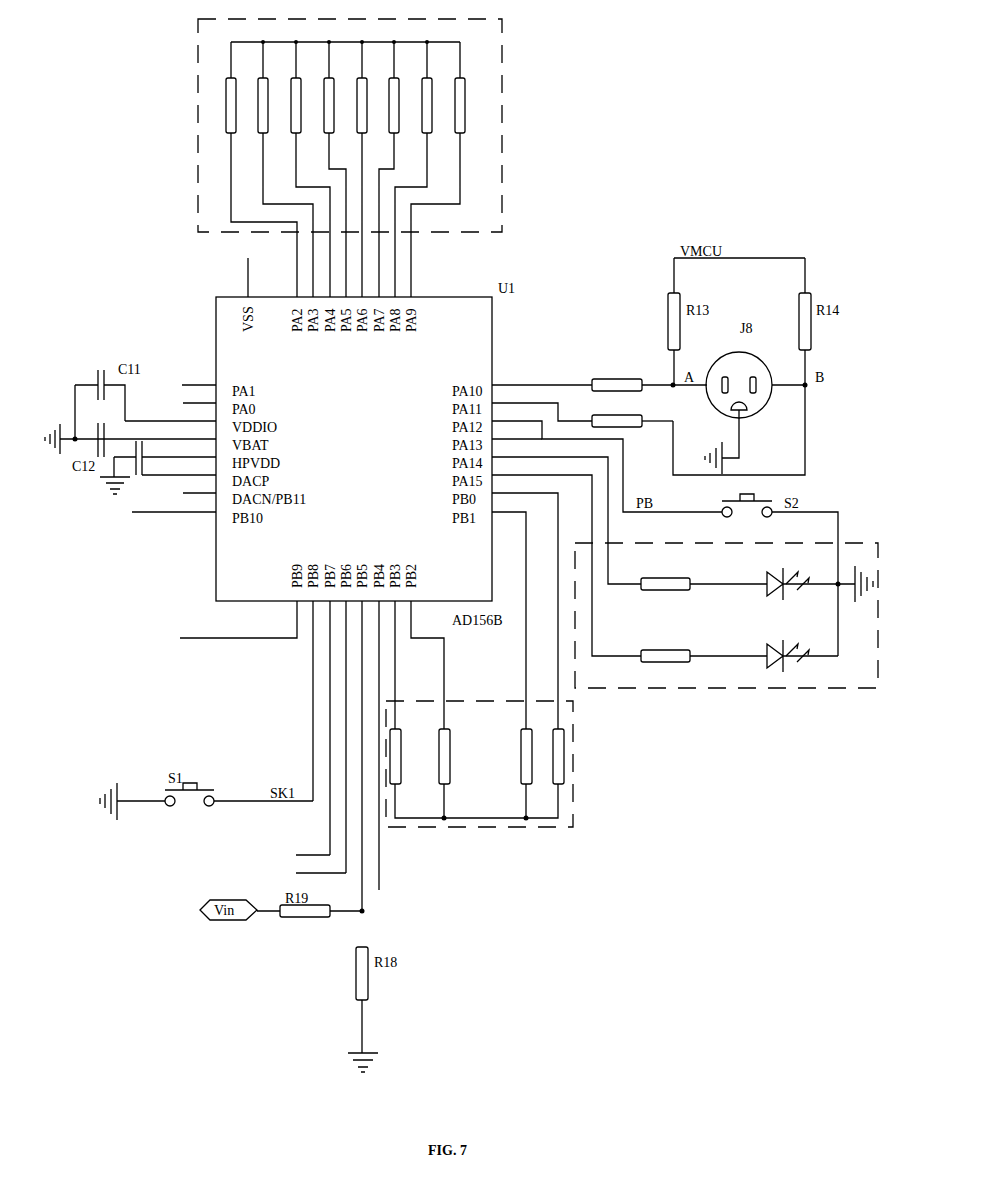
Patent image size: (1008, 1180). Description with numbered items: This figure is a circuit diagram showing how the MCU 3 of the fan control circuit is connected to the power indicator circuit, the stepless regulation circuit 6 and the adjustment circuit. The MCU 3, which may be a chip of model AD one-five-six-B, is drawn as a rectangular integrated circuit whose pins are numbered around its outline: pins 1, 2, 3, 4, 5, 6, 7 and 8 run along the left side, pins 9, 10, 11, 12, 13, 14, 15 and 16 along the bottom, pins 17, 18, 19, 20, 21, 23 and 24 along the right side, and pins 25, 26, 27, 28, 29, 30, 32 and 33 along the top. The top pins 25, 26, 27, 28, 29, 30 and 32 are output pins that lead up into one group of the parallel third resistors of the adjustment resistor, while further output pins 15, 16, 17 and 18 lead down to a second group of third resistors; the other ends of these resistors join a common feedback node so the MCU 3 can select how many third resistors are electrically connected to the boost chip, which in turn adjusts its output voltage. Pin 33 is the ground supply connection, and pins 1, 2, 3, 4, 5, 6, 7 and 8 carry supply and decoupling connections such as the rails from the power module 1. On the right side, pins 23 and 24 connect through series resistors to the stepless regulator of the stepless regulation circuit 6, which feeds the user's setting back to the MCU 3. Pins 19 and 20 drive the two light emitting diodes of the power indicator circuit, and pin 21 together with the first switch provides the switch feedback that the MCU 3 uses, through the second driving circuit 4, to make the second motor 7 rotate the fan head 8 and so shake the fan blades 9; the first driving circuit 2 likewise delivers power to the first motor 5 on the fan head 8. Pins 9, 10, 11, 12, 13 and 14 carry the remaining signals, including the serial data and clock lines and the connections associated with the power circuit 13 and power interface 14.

The power module 1 is at (199, 377).
The first driving circuit 2 is at (199, 395).
The MCU 3 is at (170, 413).
The second driving circuit 4 is at (145, 431).
The first motor 5 is at (179, 449).
The stepless regulation circuit 6 is at (179, 467).
The second motor 7 is at (199, 485).
The fan head 8 is at (174, 504).
The fan blades 9 is at (238, 621).
The MCU pin 10 (PB8) 10 is at (305, 701).
The MCU pin 11 (PB7) 11 is at (313, 728).
The MCU pin 12 (PB6) 12 is at (321, 737).
The power circuit 13 is at (354, 756).
The power interface 14 is at (400, 745).
The MCU pin 15 (PB3) 15 is at (387, 665).
The MCU pin 16 (PB2) 16 is at (420, 665).
The MCU pin 17 (PB1) 17 is at (514, 613).
The MCU pin 18 (PB0) 18 is at (525, 603).
The MCU pin 19 (PA15) 19 is at (566, 558).
The MCU pin 20 (PA14) 20 is at (566, 513).
The MCU pin 21 (PA13) 21 is at (517, 431).
The MCU pin 23 (PA11) 23 is at (582, 407).
The MCU pin 24 (PA10) 24 is at (599, 378).
The MCU pin 25 (PA9) 25 is at (403, 264).
The MCU pin 26 (PA8) 26 is at (387, 264).
The MCU pin 27 (PA7) 27 is at (371, 264).
The MCU pin 28 (PA6) 28 is at (354, 264).
The MCU pin 29 (PA5) 29 is at (338, 264).
The MCU pin 30 (PA4) 30 is at (322, 264).
The MCU pin 32 (PA2) 32 is at (289, 264).
The MCU pin 33 (VSS) 33 is at (240, 277).